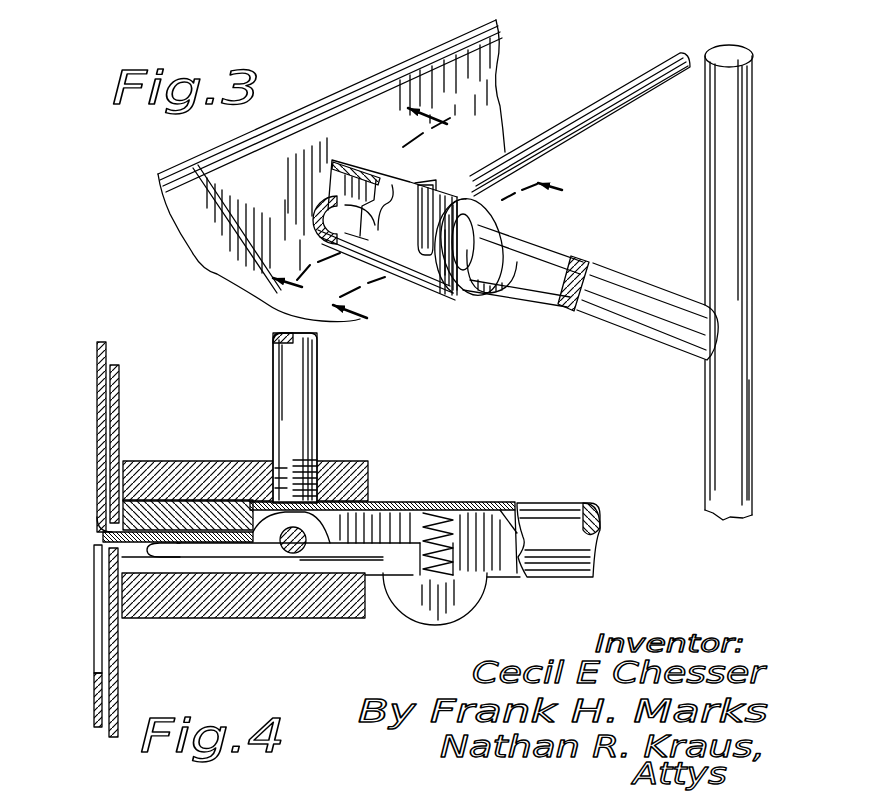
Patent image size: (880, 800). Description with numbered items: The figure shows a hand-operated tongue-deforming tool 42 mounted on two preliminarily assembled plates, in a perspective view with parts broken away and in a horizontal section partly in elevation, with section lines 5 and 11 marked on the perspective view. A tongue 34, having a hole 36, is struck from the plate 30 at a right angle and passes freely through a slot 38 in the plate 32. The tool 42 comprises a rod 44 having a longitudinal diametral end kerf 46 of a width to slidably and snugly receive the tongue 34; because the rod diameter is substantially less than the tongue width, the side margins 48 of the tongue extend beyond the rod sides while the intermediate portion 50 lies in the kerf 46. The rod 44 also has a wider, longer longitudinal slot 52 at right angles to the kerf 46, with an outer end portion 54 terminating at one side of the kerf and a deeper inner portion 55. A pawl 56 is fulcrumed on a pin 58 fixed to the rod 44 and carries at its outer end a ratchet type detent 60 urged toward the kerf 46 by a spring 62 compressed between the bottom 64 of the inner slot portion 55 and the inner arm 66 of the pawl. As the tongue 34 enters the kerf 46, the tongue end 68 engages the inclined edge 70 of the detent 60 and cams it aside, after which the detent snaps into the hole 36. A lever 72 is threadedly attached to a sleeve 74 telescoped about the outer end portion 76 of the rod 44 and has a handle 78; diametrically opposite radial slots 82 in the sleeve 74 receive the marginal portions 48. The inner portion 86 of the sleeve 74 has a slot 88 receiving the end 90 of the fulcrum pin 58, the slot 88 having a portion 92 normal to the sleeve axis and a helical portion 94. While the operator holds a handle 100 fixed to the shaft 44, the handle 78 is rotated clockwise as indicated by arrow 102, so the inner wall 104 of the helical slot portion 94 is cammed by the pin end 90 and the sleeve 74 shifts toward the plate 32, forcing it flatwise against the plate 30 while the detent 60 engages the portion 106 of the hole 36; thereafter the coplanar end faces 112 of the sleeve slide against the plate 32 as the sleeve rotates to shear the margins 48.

In FIG. 3, the section line 5- 5 is at (372, 210).
In FIG. 3, the section line 11- 11 is at (460, 255).
In FIG. 3, the plate 30 is at (170, 205).
In FIG. 4, the plate 30 is at (97, 378).
In FIG. 3, the plate 32 is at (503, 72).
In FIG. 4, the plate 32 is at (122, 385).
In FIG. 3, the tongue 34 is at (355, 162).
In FIG. 4, the tongue 34 is at (213, 520).
In FIG. 3, the hole 36 is at (333, 200).
In FIG. 4, the hole 36 is at (167, 533).
In FIG. 3, the slot 38 is at (332, 160).
In FIG. 4, the slot 38 is at (103, 538).
In FIG. 3, the tongue-deforming tool 42 is at (632, 333).
In FIG. 4, the tongue-deforming tool 42 is at (570, 503).
In FIG. 3, the rod 44 is at (632, 285).
In FIG. 4, the rod 44 is at (590, 553).
In FIG. 4, the longitudinal diametral end kerf 46 is at (253, 533).
In FIG. 3, the side margins of the tongue 48 is at (332, 163).
In FIG. 3, the intermediate portion of the tongue 50 is at (340, 183).
In FIG. 4, the intermediate portion of the tongue 50 is at (200, 560).
In FIG. 3, the longitudinal slot 52 is at (552, 290).
In FIG. 4, the longitudinal slot 52 is at (400, 520).
In FIG. 4, the outer end portion of the slot 54 is at (182, 560).
In FIG. 3, the inner portion of the slot 55 is at (510, 285).
In FIG. 4, the inner portion of the slot 55 is at (385, 585).
In FIG. 3, the pawl 56 is at (338, 242).
In FIG. 4, the pawl 56 is at (430, 625).
In FIG. 3, the pin 58 is at (428, 185).
In FIG. 4, the pin 58 is at (375, 502).
In FIG. 3, the ratchet type detent 60 is at (345, 228).
In FIG. 4, the ratchet type detent 60 is at (150, 552).
In FIG. 4, the spring 62 is at (455, 525).
In FIG. 4, the bottom of the inner slot portion 64 is at (425, 513).
In FIG. 4, the inner arm of the pawl 66 is at (460, 610).
In FIG. 4, the tongue end 68 is at (227, 537).
In FIG. 3, the inclined edge 70 is at (330, 220).
In FIG. 4, the inclined edge 70 is at (183, 538).
In FIG. 4, the lever 72 is at (320, 372).
In FIG. 3, the sleeve 74 is at (453, 296).
In FIG. 4, the sleeve 74 is at (347, 460).
In FIG. 4, the outer end portion of the rod 76 is at (123, 530).
In FIG. 3, the handle 78 is at (607, 93).
In FIG. 4, the handle 78 is at (273, 362).
In FIG. 3, the radial slots 82 is at (358, 166).
In FIG. 4, the radial slots 82 is at (110, 527).
In FIG. 4, the inner portion of the sleeve 86 is at (273, 575).
In FIG. 3, the slot 88 is at (440, 280).
In FIG. 4, the slot 88 is at (303, 563).
In FIG. 3, the end of the fulcrum pin 90 is at (436, 185).
In FIG. 3, the slot portion 92 is at (445, 240).
In FIG. 3, the helical slot portion 94 is at (480, 203).
In FIG. 3, the handle 100 is at (754, 200).
In FIG. 3, the arrow 102 is at (648, 152).
In FIG. 3, the inner wall of the helical cam slot portion 104 is at (395, 250).
In FIG. 4, the portion of the tongue hole 106 is at (167, 545).
In FIG. 4, the end faces of the sleeve 112 is at (123, 481).